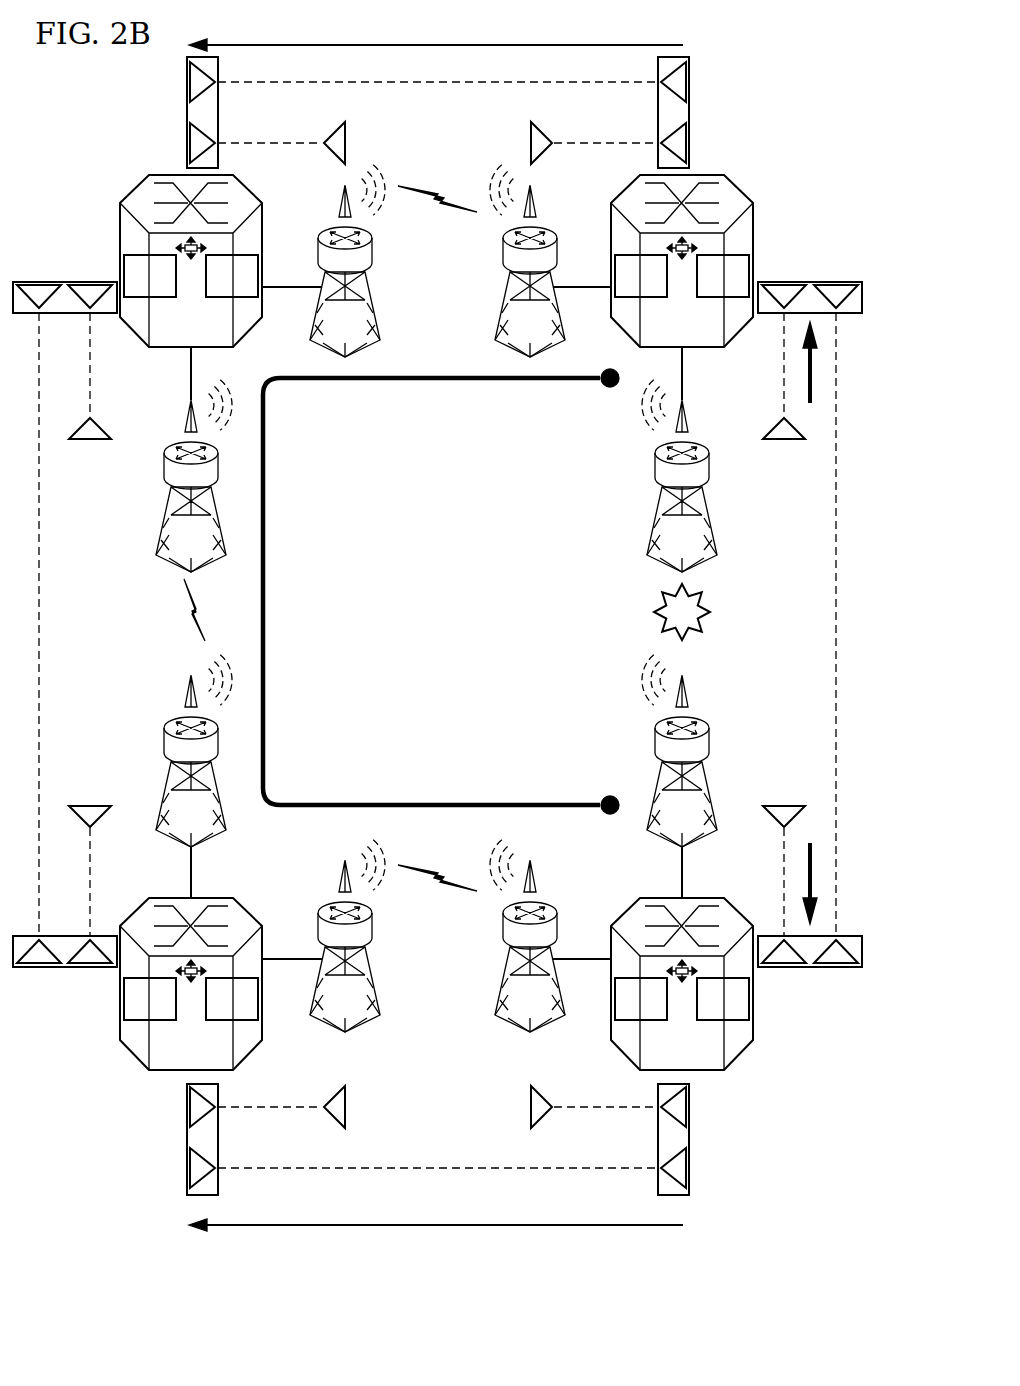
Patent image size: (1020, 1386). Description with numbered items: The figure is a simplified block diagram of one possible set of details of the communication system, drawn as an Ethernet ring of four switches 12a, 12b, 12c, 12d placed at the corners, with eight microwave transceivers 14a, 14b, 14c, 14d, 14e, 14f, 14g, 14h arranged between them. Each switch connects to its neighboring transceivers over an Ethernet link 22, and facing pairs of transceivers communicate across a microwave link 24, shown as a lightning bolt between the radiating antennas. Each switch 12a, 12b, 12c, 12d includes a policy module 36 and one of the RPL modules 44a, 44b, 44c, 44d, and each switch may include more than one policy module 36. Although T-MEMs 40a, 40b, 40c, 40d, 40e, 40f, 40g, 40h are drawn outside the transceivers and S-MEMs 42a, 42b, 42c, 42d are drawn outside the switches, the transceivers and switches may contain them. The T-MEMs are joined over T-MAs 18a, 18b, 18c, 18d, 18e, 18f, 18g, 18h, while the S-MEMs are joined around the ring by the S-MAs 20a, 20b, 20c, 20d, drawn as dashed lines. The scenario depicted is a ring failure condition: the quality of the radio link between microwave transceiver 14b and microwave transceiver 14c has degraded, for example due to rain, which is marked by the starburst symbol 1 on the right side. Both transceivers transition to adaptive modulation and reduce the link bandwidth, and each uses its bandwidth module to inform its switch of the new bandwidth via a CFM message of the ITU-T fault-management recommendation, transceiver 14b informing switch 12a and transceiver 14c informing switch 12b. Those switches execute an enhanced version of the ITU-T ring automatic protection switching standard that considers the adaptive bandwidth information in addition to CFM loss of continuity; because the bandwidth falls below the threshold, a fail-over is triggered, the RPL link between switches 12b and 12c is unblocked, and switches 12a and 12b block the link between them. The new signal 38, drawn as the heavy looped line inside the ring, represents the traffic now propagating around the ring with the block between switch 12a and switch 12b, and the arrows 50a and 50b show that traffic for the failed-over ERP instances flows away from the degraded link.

The fault/failure indication 1 is at (682, 612).
The switch 12a is at (735, 184).
The switch 12b is at (735, 1062).
The switch 12c is at (142, 1062).
The switch 12d is at (142, 184).
The microwave transceiver 14a is at (500, 283).
The microwave transceiver 14b is at (715, 530).
The microwave transceiver 14c is at (712, 778).
The microwave transceiver 14d is at (437, 618).
The microwave transceiver 14e is at (382, 993).
The microwave transceiver 14f is at (170, 778).
The microwave transceiver 14g is at (162, 530).
The microwave transceiver 14h is at (382, 318).
The T-MA 18a is at (612, 143).
The T-MA 18b is at (782, 390).
The T-MA 18c is at (782, 866).
The T-MA 18d is at (612, 1108).
The T-MA 18e is at (278, 1108).
The T-MA 18f is at (92, 866).
The T-MA 18g is at (92, 390).
The T-MA 18h is at (278, 143).
The S-MA 20a is at (833, 610).
The S-MA 20b is at (478, 1170).
The S-MA 20c is at (42, 610).
The S-MA 20d is at (318, 83).
The Ethernet link 22 is at (296, 286).
The microwave link 24 is at (440, 197).
The policy module 36 is at (735, 1011).
The new signal 38 is at (266, 600).
The T-MEM 40a is at (527, 140).
The T-MEM 40b is at (792, 442).
The T-MEM 40c is at (792, 805).
The T-MEM 40d is at (527, 1112).
The T-MEM 40e is at (347, 1112).
The T-MEM 40f is at (86, 805).
The T-MEM 40g is at (86, 442).
The T-MEM 40h is at (347, 140).
The S-MEM 42a is at (691, 112).
The S-MEM 42b is at (810, 968).
The S-MEM 42c is at (64, 968).
The S-MEM 42d is at (186, 110).
The RPL module 44a is at (623, 288).
The RPL module 44b is at (623, 1011).
The RPL module 44c is at (214, 1011).
The RPL module 44d is at (214, 288).
The arrow 50a is at (680, 45).
The arrow 50b is at (405, 1225).